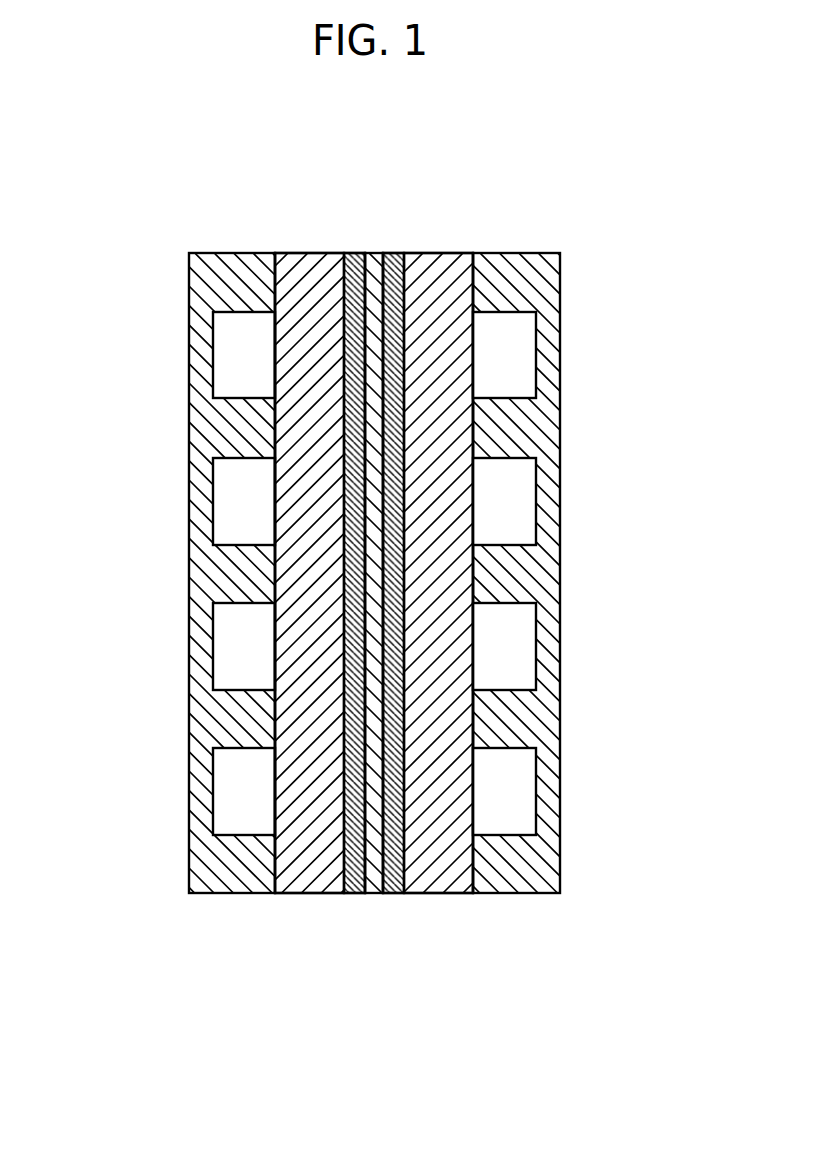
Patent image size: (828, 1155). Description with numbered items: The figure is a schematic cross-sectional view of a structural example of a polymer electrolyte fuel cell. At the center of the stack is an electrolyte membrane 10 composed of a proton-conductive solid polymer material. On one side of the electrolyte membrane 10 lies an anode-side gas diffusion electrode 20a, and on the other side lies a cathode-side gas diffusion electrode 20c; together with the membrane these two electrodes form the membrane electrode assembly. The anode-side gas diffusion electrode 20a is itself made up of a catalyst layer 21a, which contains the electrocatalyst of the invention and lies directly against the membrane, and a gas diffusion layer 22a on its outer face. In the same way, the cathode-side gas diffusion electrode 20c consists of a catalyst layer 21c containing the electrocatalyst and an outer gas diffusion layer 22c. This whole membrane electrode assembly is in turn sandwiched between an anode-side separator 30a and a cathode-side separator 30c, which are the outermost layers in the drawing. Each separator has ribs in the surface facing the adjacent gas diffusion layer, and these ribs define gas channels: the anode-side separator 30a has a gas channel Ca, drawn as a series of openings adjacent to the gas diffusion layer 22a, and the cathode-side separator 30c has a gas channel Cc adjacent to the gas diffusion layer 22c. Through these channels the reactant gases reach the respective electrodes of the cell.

The electrolyte membrane 10 is at (373, 253).
The anode-side gas diffusion electrode 20a is at (367, 246).
The catalyst layer 21a is at (349, 893).
The gas diffusion layer 22a is at (297, 893).
The cathode-side gas diffusion electrode 20c is at (383, 900).
The catalyst layer 21c is at (396, 253).
The gas diffusion layer 22c is at (455, 253).
The anode-side separator 30a is at (215, 877).
The cathode-side separator 30c is at (542, 872).
The gas channel Ca is at (233, 372).
The gas channel Cc is at (518, 372).